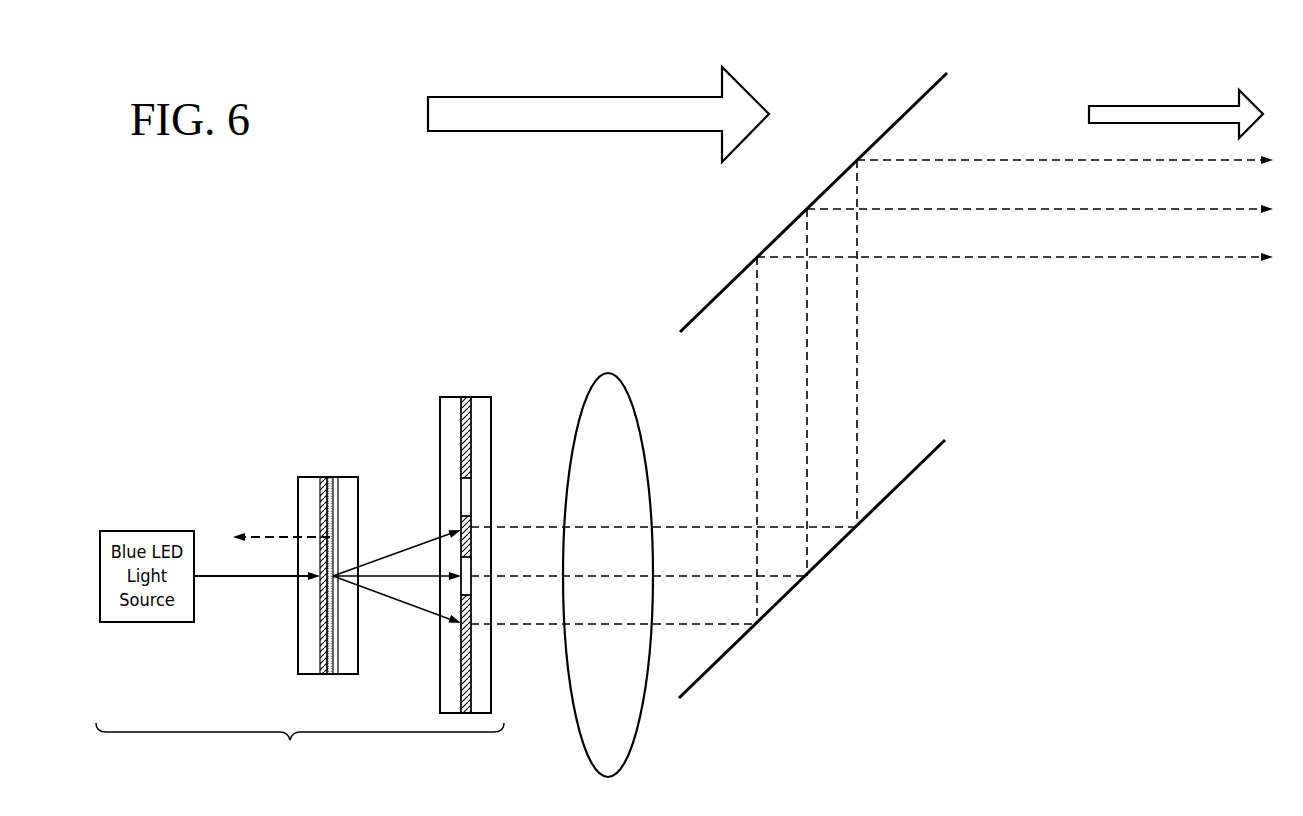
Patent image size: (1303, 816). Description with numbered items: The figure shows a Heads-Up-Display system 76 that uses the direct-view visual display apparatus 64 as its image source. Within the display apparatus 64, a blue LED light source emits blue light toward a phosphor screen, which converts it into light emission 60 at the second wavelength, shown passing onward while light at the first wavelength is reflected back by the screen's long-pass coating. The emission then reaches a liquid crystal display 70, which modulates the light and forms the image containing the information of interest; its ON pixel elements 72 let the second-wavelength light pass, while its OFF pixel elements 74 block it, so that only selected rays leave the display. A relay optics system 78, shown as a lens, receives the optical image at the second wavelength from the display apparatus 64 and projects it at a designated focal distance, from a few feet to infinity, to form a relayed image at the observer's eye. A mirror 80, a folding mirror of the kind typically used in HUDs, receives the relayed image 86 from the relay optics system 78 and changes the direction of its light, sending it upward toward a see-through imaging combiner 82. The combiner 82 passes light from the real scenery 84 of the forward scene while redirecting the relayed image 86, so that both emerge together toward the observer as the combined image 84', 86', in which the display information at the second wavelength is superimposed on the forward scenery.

The light emission 60 is at (382, 555).
The direct-view visual display apparatus 64 is at (300, 747).
The liquid crystal display 70 is at (494, 385).
The ON pixel elements 72 is at (526, 578).
The OFF pixel elements 74 is at (528, 526).
The Heads-Up-Display system 76 is at (416, 247).
The relay optics system 78 is at (596, 384).
The mirror 80 is at (893, 493).
The see-through imaging combiner 82 is at (915, 96).
The real scenery 84 is at (598, 94).
The combined image (scenery component) 84' is at (1176, 88).
The relayed image 86 is at (853, 392).
The combined image (relayed image component) 86' is at (1030, 254).